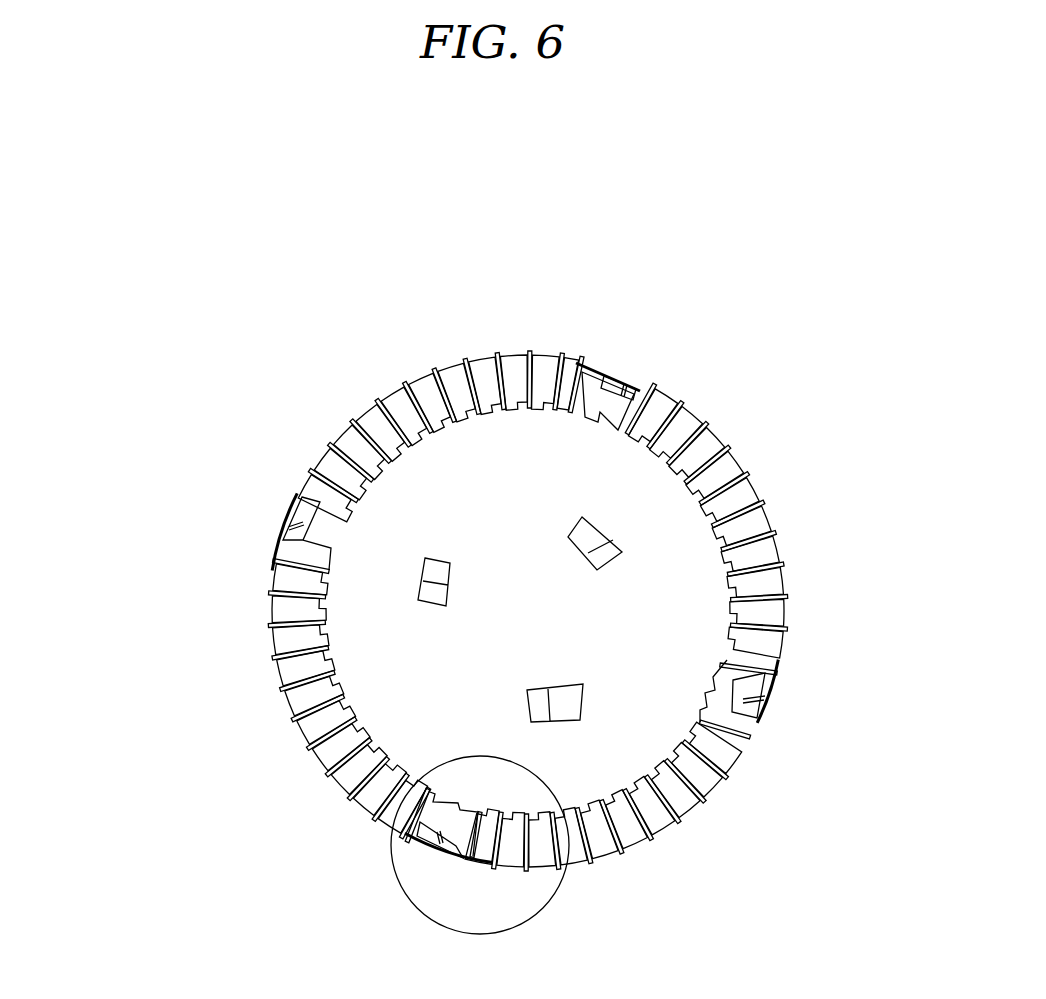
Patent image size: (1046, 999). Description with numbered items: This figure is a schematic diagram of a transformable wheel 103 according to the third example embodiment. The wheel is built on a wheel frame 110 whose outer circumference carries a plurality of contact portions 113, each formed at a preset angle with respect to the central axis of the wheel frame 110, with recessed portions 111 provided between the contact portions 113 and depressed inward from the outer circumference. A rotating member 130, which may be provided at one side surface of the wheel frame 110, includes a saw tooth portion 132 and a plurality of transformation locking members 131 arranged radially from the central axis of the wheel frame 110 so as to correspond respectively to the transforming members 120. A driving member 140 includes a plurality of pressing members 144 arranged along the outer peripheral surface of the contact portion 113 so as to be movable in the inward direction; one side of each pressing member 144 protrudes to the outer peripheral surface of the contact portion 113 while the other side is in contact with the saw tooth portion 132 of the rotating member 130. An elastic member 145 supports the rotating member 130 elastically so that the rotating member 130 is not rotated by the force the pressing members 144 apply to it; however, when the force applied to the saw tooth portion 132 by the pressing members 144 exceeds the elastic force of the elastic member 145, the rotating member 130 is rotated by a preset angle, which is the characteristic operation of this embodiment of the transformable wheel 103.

The transformable wheel 103 is at (481, 192).
The wheel frame 110 is at (445, 378).
The recessed portion 111 is at (638, 382).
The contact portion 113 is at (332, 760).
The transforming member 120 is at (619, 368).
The rotating member 130 is at (700, 612).
The transformation locking member 131 is at (578, 363).
The saw tooth portion 132 is at (690, 806).
The driving member 140 is at (270, 597).
The pressing member 144 is at (375, 405).
The elastic member 145 is at (617, 553).